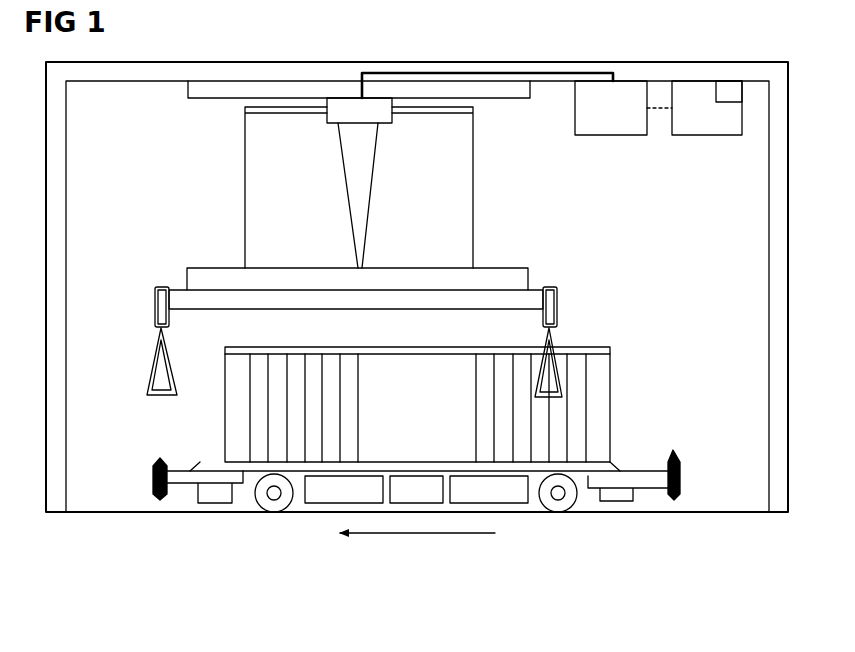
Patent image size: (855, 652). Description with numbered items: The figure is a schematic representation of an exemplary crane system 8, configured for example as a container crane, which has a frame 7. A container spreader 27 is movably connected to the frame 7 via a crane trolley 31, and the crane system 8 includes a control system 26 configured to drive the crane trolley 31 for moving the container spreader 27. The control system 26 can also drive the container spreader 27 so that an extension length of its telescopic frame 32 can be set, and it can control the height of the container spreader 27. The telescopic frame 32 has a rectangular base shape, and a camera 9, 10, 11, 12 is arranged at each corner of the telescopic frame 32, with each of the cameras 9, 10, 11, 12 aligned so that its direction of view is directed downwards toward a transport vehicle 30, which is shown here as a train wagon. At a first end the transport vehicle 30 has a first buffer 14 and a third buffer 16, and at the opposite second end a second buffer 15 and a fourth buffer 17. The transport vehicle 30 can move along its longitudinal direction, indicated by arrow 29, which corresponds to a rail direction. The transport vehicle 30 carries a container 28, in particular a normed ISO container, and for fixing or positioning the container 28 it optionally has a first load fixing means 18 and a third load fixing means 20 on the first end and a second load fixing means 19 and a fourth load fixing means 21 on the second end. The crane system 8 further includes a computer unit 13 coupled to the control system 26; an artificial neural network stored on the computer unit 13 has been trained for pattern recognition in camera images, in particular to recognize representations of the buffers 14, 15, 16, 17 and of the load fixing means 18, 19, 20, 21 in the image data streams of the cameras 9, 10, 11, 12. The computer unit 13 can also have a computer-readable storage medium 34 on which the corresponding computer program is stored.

The frame 7 is at (67, 177).
The crane system 8 is at (417, 287).
The camera 9 is at (169, 314).
The camera 10 is at (543, 312).
The camera 11 is at (170, 312).
The camera 12 is at (548, 315).
The computer unit 13 is at (707, 108).
The first buffer 14 is at (131, 518).
The second buffer 15 is at (681, 455).
The third buffer 16 is at (165, 504).
The fourth buffer 17 is at (710, 467).
The first load fixing means 18 is at (174, 391).
The second load fixing means 19 is at (620, 391).
The third load fixing means 20 is at (216, 454).
The fourth load fixing means 21 is at (616, 455).
The control system 26 is at (611, 108).
The container spreader 27 is at (533, 282).
The container 28 is at (613, 344).
The arrow 29 is at (417, 534).
The transport vehicle 30 is at (186, 461).
The crane trolley 31 is at (384, 124).
The telescopic frame 32 is at (440, 296).
The computer-readable storage medium 34 is at (728, 88).